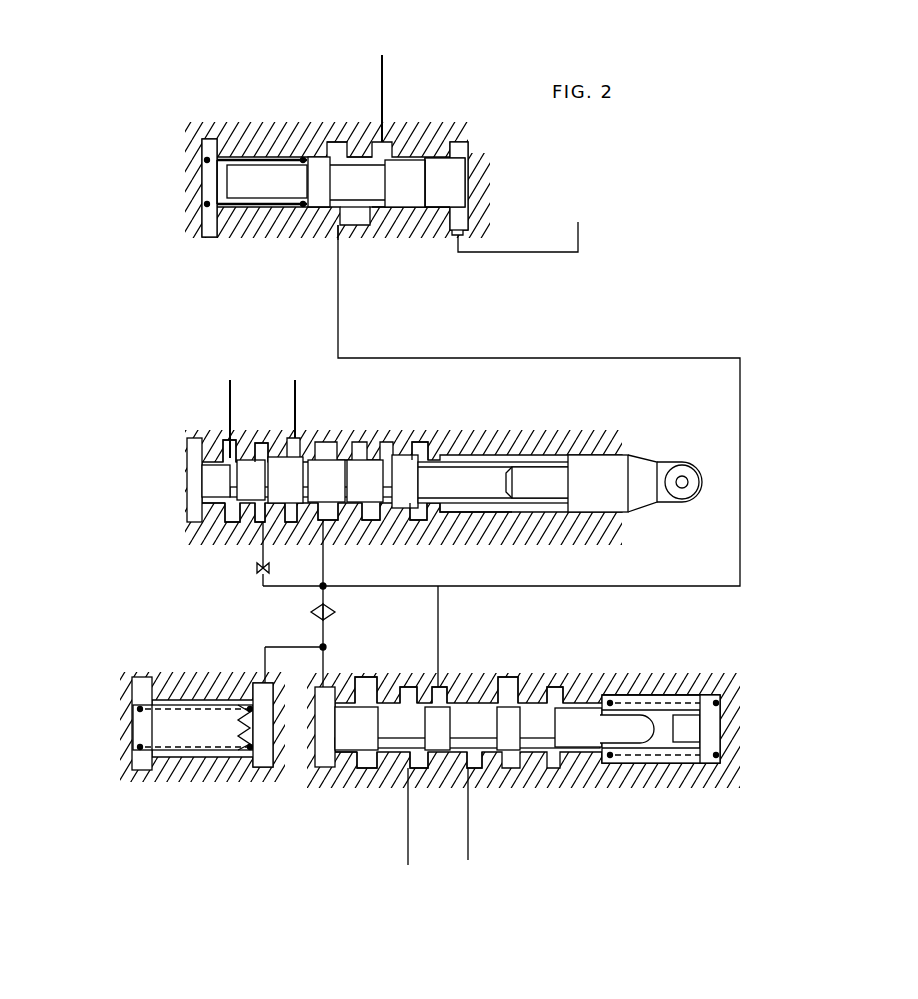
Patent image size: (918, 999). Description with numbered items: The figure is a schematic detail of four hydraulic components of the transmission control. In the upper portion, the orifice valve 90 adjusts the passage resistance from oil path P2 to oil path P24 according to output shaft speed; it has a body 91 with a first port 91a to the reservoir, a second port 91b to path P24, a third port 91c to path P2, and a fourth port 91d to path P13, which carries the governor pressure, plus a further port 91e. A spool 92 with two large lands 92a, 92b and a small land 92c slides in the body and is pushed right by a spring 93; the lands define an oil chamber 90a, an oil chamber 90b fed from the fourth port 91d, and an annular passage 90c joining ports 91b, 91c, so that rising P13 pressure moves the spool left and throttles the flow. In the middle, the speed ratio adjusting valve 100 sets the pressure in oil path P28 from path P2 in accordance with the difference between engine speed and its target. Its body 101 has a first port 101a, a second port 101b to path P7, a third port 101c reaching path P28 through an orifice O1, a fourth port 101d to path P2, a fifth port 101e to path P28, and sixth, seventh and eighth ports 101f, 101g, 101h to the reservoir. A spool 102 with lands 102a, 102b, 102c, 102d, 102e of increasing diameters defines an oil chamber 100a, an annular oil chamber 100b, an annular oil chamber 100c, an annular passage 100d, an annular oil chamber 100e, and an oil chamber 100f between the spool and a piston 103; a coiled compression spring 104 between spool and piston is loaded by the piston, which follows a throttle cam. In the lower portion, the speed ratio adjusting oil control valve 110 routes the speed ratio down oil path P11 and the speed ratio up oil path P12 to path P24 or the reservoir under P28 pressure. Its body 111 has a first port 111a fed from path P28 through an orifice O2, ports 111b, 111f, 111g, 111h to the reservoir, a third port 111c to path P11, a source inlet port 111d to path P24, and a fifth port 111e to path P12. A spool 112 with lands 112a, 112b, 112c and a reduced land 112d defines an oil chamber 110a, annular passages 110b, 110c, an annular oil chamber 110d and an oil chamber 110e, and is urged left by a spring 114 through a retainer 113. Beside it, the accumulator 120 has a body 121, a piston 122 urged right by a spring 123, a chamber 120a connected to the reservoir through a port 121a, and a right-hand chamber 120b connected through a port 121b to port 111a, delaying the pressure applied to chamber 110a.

The orifice valve 90 is at (256, 84).
The oil chamber 90a is at (215, 150).
The oil chamber 90b is at (470, 212).
The annular passage 90c is at (352, 145).
The body 91 is at (268, 230).
The first port 91a is at (208, 226).
The second port 91b is at (355, 228).
The third port 91c is at (420, 158).
The fourth port 91d is at (470, 232).
The port 91e is at (362, 140).
The spool 92 is at (318, 160).
The land 92a is at (312, 228).
The land 92b is at (465, 165).
The land 92c is at (445, 145).
The spring 93 is at (302, 157).
The oil path P2 is at (382, 72).
The oil path P13 is at (537, 226).
The oil path P24 is at (448, 358).
The oil path P7 is at (230, 380).
The oil path P28 is at (323, 586).
The speed ratio down oil path P11 is at (399, 832).
The speed ratio up oil path P12 is at (490, 827).
The orifice O1 is at (258, 570).
The orifice O2 is at (311, 612).
The speed ratio adjusting valve 100 is at (643, 430).
The oil chamber 100a is at (200, 484).
The annular oil chamber 100b is at (208, 440).
The annular oil chamber 100c is at (240, 522).
The annular passage 100d is at (300, 440).
The annular oil chamber 100e is at (420, 442).
The oil chamber 100f is at (500, 465).
The body 101 is at (580, 455).
The first port 101a is at (190, 462).
The second port 101b is at (225, 440).
The third port 101c is at (262, 524).
The fourth port 101d is at (262, 443).
The fifth port 101e is at (338, 522).
The sixth port 101f is at (328, 442).
The seventh port 101g is at (390, 442).
The eighth port 101h is at (455, 456).
The spool 102 is at (462, 512).
The land 102a is at (212, 505).
The land 102b is at (230, 522).
The land 102c is at (300, 524).
The land 102d is at (375, 522).
The land 102e is at (420, 522).
The piston 103 is at (605, 512).
The coiled compression spring 104 is at (556, 512).
The speed ratio adjusting oil control valve 110 is at (641, 656).
The oil chamber 110a is at (322, 772).
The annular passage 110b is at (362, 772).
The annular passage 110c is at (475, 772).
The annular oil chamber 110d is at (556, 688).
The oil chamber 110e is at (660, 695).
The body 111 is at (508, 780).
The first port 111a is at (340, 690).
The second port 111b is at (372, 685).
The third port 111c is at (392, 782).
The source inlet port 111d is at (444, 688).
The fifth port 111e is at (450, 780).
The sixth port 111f is at (507, 688).
The seventh port 111g is at (570, 706).
The eighth port 111h is at (715, 692).
The spool 112 is at (650, 764).
The land 112a is at (345, 782).
The land 112b is at (432, 770).
The land 112c is at (530, 772).
The land 112d is at (592, 772).
The retainer 113 is at (618, 714).
The spring 114 is at (722, 752).
The accumulator 120 is at (142, 785).
The chamber 120a is at (135, 737).
The right-hand chamber 120b is at (265, 770).
The body 121 is at (215, 775).
The port 121a is at (130, 690).
The port 121b is at (262, 680).
The piston 122 is at (242, 698).
The spring 123 is at (135, 770).